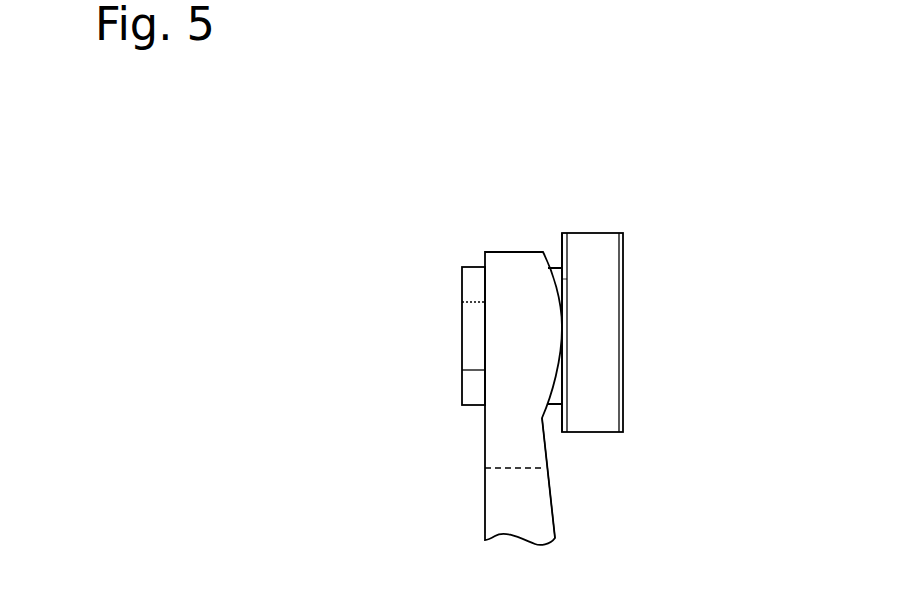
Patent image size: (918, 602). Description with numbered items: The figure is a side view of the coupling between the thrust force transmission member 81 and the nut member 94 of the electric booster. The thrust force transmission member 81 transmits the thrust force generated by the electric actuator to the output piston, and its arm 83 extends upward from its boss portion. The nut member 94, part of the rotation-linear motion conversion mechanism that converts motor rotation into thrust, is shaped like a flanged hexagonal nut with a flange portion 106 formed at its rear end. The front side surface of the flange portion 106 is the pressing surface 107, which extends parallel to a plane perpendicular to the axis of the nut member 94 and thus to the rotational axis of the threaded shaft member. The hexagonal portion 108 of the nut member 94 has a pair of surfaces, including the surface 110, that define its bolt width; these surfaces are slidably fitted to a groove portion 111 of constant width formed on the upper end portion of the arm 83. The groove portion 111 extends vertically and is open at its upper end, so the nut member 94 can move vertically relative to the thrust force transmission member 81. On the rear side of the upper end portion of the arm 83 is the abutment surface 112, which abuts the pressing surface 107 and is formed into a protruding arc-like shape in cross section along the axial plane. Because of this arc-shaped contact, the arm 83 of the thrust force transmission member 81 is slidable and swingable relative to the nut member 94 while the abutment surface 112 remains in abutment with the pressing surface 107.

The thrust force transmission member 81 is at (510, 240).
The arm 83 is at (522, 508).
The nut member 94 is at (455, 256).
The flange portion 106 is at (605, 255).
The pressing surface 107 is at (559, 243).
The hexagonal portion 108 is at (470, 290).
The surface 110 is at (477, 342).
The groove portion 111 is at (510, 467).
The abutment surface 112 is at (558, 279).